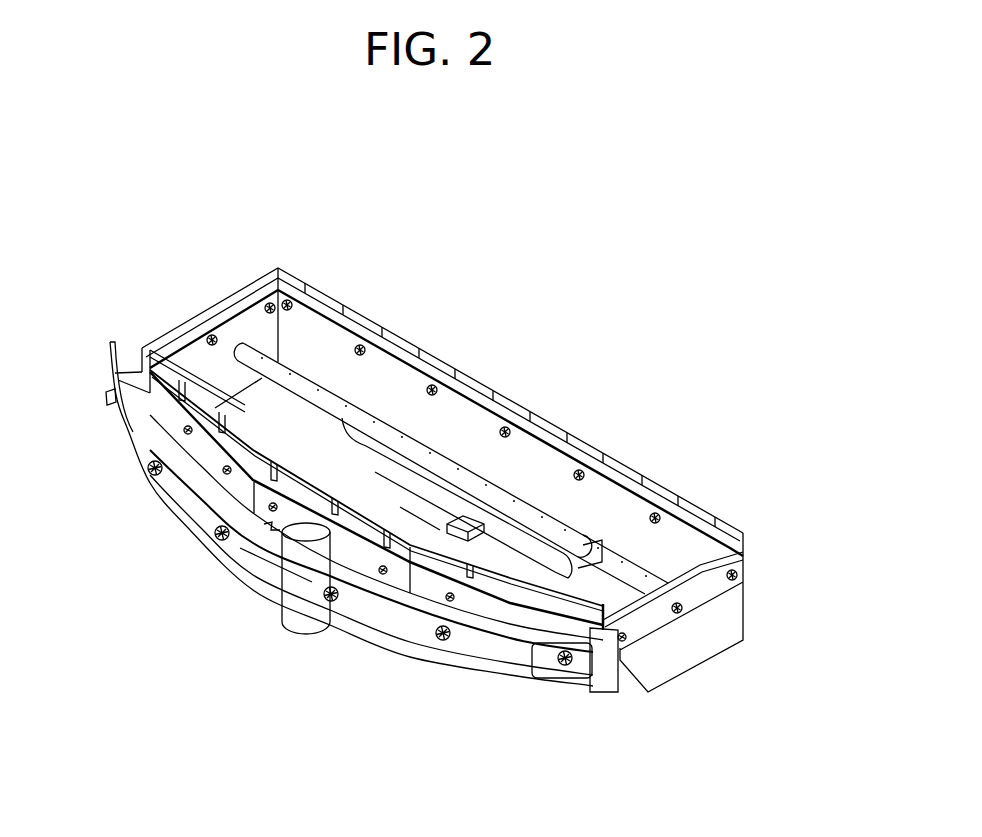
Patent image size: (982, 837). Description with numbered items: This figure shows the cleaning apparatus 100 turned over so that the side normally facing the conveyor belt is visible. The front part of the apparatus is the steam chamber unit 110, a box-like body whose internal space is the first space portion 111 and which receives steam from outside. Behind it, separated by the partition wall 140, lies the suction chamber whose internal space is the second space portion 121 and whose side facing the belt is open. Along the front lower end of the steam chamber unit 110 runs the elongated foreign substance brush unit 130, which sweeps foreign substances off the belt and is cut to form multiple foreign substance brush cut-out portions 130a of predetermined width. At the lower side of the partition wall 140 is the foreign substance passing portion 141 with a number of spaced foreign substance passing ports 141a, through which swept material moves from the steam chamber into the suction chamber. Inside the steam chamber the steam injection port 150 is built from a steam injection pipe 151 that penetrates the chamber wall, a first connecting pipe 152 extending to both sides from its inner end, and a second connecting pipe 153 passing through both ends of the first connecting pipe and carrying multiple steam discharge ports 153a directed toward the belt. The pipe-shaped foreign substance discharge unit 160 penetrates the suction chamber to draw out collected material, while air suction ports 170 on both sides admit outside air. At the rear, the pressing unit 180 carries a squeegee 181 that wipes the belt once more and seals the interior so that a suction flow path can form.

The cleaning apparatus 100 is at (205, 278).
The steam chamber unit 110 is at (683, 647).
The first space portion 111 is at (297, 424).
The second space portion 121 is at (270, 530).
The foreign substance brush unit 130 is at (442, 402).
The foreign substance brush cut-out portions 130a is at (437, 372).
The partition wall 140 is at (342, 713).
The foreign substance passing portion 141 is at (573, 610).
The foreign substance passing ports 141a is at (513, 600).
The steam injection port 150 is at (488, 320).
The steam injection pipe 151 is at (456, 518).
The first connecting pipe 152 is at (507, 535).
The second connecting pipe 153 is at (550, 527).
The steam discharge ports 153a is at (605, 552).
The foreign substance discharge unit 160 is at (292, 620).
The air suction port 170 is at (134, 380).
The pressing unit 180 is at (552, 655).
The squeegee 181 is at (605, 678).